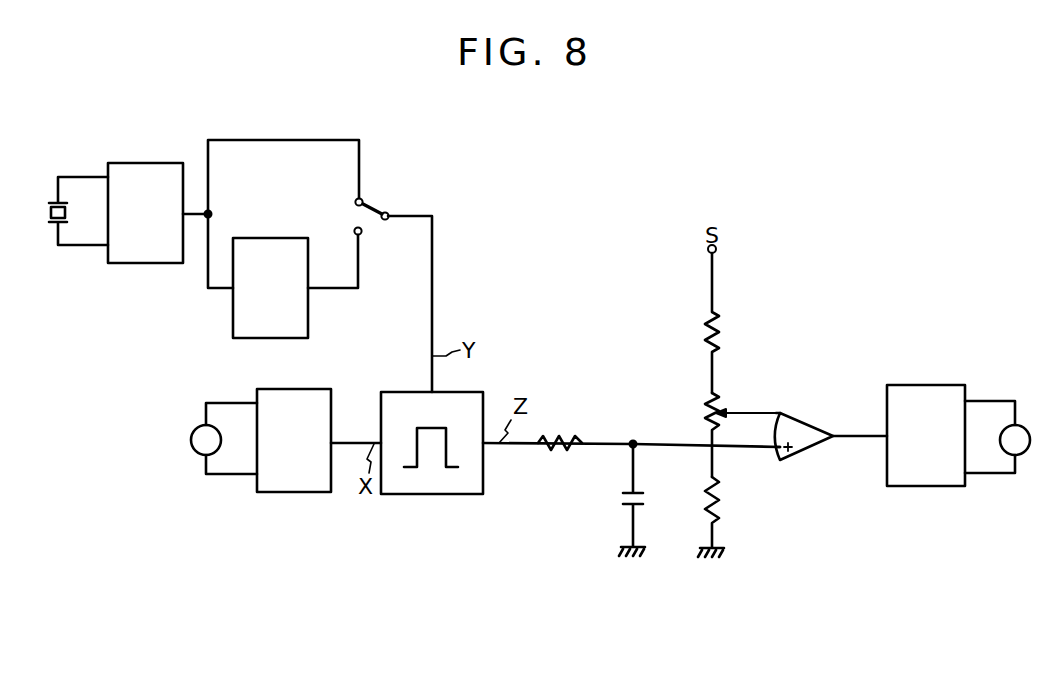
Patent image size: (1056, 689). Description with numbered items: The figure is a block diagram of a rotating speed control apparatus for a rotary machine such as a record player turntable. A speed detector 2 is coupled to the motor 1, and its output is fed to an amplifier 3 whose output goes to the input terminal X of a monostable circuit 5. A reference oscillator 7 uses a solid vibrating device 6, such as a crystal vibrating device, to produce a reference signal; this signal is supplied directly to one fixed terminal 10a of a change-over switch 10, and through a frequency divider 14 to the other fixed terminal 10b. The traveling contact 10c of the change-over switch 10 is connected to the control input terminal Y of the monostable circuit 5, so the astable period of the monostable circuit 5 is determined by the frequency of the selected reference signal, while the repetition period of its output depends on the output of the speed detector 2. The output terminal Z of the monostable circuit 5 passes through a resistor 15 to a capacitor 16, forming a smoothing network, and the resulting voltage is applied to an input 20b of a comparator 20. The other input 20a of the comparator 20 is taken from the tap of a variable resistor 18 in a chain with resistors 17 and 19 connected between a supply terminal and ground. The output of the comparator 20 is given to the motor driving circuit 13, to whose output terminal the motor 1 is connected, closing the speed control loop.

The motor 1 is at (1027, 452).
The speed detector 2 is at (199, 455).
The amplifier 3 is at (333, 492).
The monostable circuit 5 is at (483, 494).
The solid vibrating device 6 is at (56, 226).
The reference oscillator 7 is at (119, 264).
The change-over switch 10 is at (384, 211).
The fixed terminal 10a is at (362, 199).
The fixed terminal 10b is at (361, 236).
The traveling contact 10c is at (388, 221).
The motor driving circuit 13 is at (965, 388).
The frequency divider (1/2) 14 is at (309, 338).
The resistor 15 is at (568, 434).
The capacitor 16 is at (620, 504).
The resistor 17 is at (700, 332).
The variable resistor 18 is at (700, 411).
The resistor 19 is at (722, 497).
The comparator 20 is at (815, 423).
The comparator inverting input 20a is at (777, 411).
The comparator non-inverting input 20b is at (777, 456).